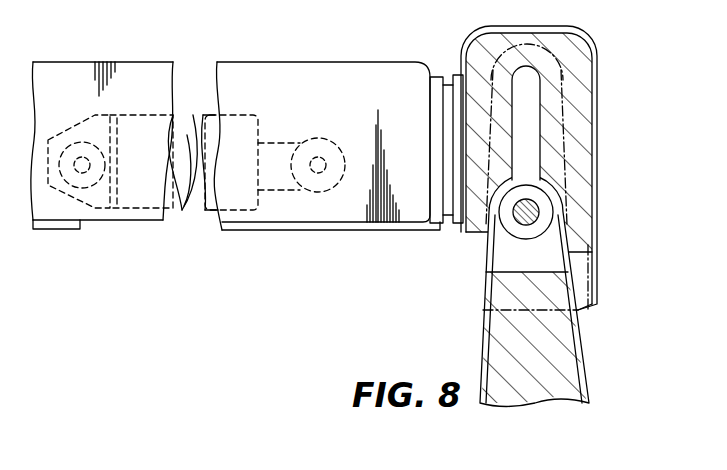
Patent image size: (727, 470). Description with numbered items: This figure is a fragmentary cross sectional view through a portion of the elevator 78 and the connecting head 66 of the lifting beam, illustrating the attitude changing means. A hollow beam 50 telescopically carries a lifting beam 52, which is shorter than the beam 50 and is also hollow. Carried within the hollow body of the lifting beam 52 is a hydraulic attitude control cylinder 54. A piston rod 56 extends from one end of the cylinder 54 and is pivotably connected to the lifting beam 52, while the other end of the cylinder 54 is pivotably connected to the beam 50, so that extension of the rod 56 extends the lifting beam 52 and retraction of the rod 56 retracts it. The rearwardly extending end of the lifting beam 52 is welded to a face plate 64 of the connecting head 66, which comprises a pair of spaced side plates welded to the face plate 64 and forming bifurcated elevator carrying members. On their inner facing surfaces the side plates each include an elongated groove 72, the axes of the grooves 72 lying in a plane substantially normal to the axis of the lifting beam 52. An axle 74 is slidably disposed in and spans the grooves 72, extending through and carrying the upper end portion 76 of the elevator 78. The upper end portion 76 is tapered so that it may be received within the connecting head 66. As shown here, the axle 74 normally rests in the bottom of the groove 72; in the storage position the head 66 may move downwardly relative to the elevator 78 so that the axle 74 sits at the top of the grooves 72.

The hollow beam 50 is at (260, 62).
The lifting beam 52 is at (440, 77).
The hydraulic attitude control cylinder 54 is at (173, 115).
The piston rod 56 is at (273, 143).
The face plate 64 is at (456, 78).
The connecting head 66 is at (589, 31).
The elongated groove 72 is at (535, 152).
The axle 74 is at (540, 212).
The upper end portion 76 is at (585, 247).
The elevator 78 is at (603, 348).